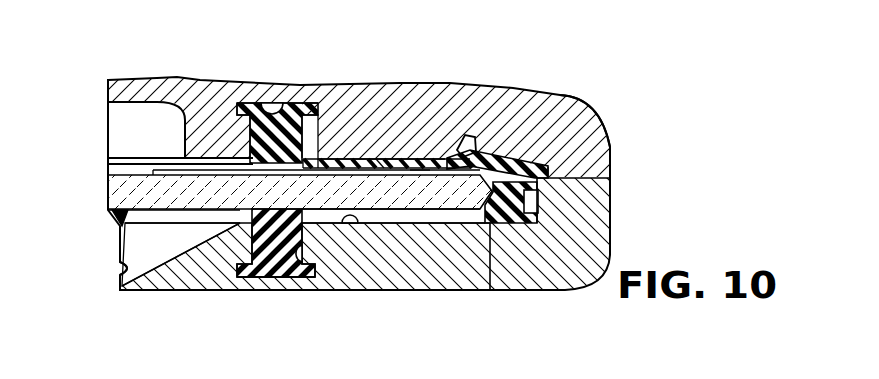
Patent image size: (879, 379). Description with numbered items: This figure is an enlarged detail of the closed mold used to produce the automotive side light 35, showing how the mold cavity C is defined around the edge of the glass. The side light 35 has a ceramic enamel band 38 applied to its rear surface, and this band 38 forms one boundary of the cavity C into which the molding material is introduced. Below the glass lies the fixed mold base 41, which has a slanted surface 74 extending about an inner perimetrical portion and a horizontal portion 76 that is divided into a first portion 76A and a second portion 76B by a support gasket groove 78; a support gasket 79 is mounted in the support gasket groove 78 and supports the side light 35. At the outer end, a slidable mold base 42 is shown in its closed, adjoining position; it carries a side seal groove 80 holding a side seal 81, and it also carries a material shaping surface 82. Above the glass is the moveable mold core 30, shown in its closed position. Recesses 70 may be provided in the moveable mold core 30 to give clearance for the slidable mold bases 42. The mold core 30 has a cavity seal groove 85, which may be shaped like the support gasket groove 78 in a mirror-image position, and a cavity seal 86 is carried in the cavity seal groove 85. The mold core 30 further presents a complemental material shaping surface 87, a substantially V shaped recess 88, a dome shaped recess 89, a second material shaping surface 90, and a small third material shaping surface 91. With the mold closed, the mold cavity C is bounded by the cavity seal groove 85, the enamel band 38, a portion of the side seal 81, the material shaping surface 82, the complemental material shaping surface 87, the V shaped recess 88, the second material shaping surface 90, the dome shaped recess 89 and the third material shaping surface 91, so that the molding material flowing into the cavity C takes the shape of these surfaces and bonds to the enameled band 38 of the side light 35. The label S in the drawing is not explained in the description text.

The moveable mold core 30 is at (197, 81).
The automotive side light 35 is at (118, 227).
The ceramic enamel band 38 is at (156, 165).
The fixed mold base 41 is at (182, 290).
The slidable mold base 42 is at (567, 291).
The recesses 70 is at (417, 211).
The slanted surface 74 is at (128, 270).
The horizontal portion 76 is at (441, 158).
The first portion 76A is at (240, 221).
The second portion 76B is at (350, 226).
The support gasket groove 78 is at (292, 266).
The support gasket 79 is at (250, 279).
The side seal groove 80 is at (516, 212).
The side seal 81 is at (562, 198).
The material shaping surface 82 is at (540, 160).
The cavity seal groove 85 is at (268, 106).
The cavity seal 86 is at (250, 125).
The complemental material shaping surface 87 is at (553, 103).
The substantially V shaped recess 88 is at (478, 145).
The dome shaped recess 89 is at (305, 162).
The second material shaping surface 90 is at (381, 163).
The third material shaping surface 91 is at (320, 160).
The mold cavity C is at (423, 190).
The shaft S is at (110, 187).